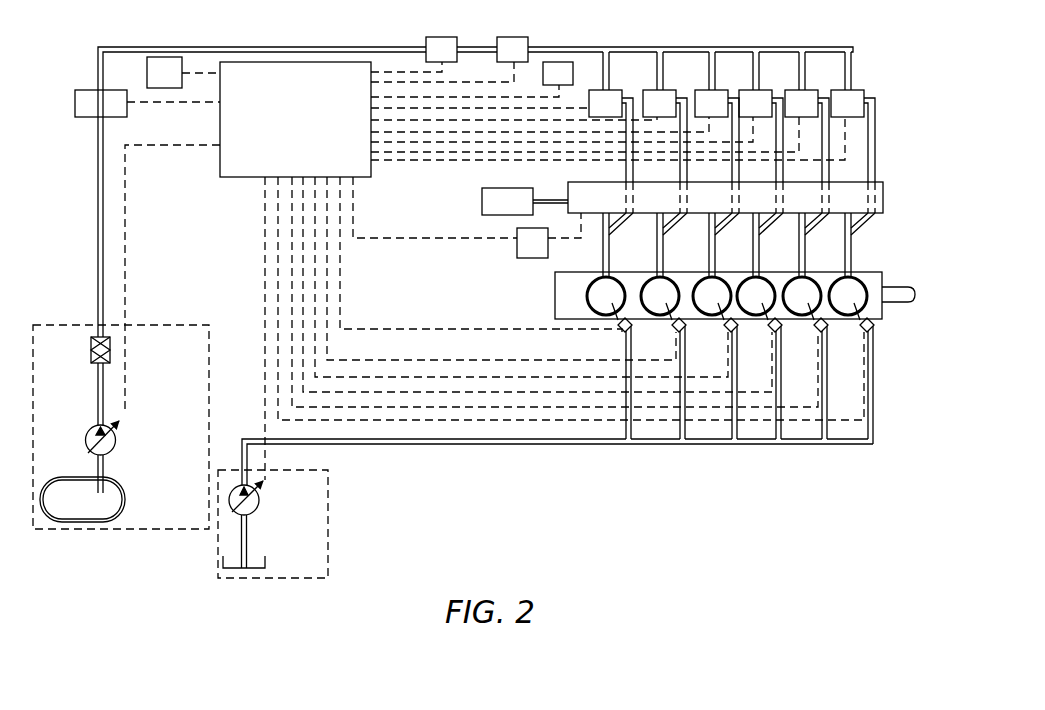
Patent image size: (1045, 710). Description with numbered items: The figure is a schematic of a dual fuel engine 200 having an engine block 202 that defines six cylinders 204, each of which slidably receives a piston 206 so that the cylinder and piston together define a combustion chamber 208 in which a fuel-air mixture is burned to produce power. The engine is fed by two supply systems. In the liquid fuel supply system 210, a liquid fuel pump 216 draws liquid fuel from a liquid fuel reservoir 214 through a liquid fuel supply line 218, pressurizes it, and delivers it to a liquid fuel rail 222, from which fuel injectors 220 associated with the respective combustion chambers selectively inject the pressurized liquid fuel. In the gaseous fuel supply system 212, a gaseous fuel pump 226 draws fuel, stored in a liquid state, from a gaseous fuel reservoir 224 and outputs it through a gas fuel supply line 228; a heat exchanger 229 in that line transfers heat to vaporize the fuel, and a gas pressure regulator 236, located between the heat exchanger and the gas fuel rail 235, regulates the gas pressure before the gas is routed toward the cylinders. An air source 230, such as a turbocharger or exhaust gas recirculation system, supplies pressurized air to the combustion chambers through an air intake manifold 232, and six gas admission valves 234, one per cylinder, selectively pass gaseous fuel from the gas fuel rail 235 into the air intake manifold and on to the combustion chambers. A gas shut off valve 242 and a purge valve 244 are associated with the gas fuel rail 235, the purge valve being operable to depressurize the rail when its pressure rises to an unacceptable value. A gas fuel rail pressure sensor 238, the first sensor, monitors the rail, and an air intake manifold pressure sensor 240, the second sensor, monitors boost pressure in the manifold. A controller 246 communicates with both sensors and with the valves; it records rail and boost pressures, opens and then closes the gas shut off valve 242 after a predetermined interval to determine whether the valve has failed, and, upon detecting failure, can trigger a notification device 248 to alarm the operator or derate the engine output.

The dual fuel engine 200 is at (862, 518).
The engine block 202 is at (886, 273).
The cylinder 204 is at (623, 280).
The piston 206 is at (727, 296).
The combustion chamber 208 is at (624, 283).
The liquid fuel supply system 210 is at (334, 490).
The gaseous fuel supply system 212 is at (50, 322).
The liquid fuel reservoir 214 is at (266, 564).
The liquid fuel pump 216 is at (259, 500).
The liquid fuel supply line 218 is at (248, 536).
The fuel injector 220 is at (633, 328).
The liquid fuel rail 222 is at (530, 445).
The gaseous fuel reservoir 224 is at (126, 500).
The gaseous fuel pump 226 is at (116, 440).
The gas fuel supply line 228 is at (98, 382).
The heat exchanger 229 is at (91, 350).
The air source 230 is at (525, 201).
The air intake manifold 232 is at (725, 197).
The gas admission valve 234 is at (726, 84).
The gas fuel rail 235 is at (643, 46).
The gas pressure regulator 236 is at (101, 103).
The gas fuel rail pressure sensor 238 is at (558, 73).
The air intake manifold pressure sensor 240 is at (532, 243).
The gas shut off valve 242 is at (441, 49).
The purge valve 244 is at (512, 49).
The controller 246 is at (494, 271).
The notification device 248 is at (164, 72).